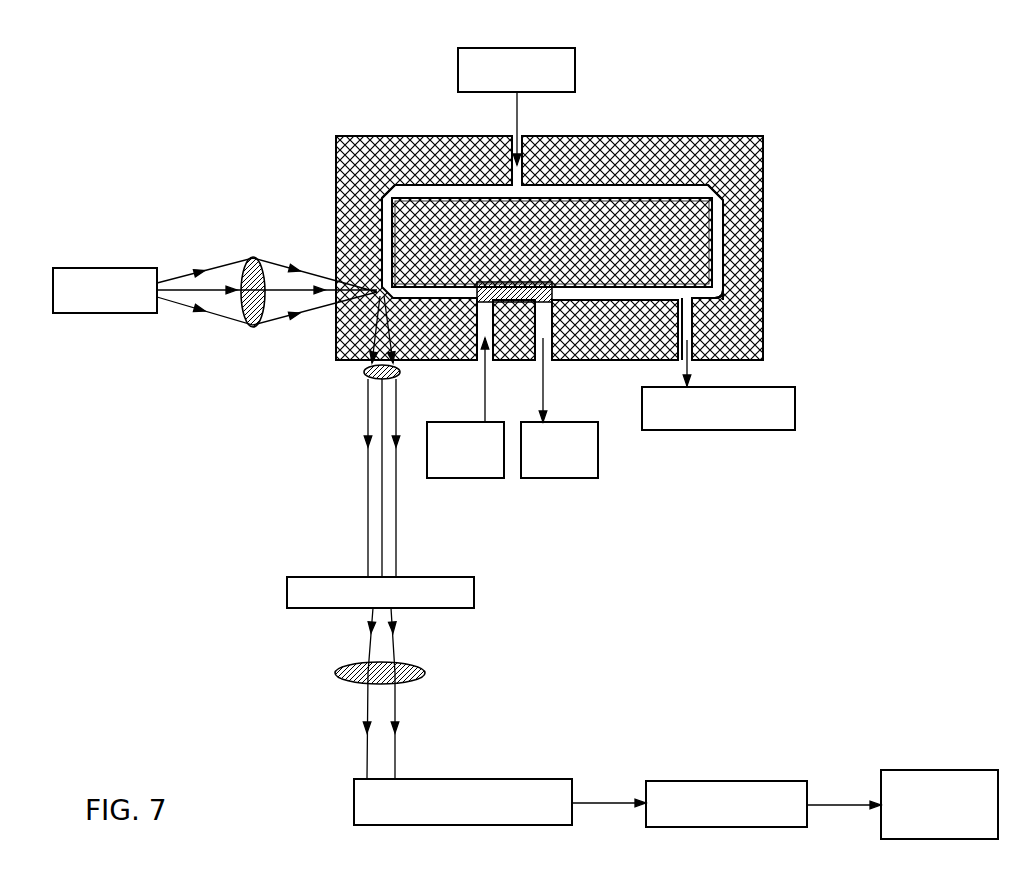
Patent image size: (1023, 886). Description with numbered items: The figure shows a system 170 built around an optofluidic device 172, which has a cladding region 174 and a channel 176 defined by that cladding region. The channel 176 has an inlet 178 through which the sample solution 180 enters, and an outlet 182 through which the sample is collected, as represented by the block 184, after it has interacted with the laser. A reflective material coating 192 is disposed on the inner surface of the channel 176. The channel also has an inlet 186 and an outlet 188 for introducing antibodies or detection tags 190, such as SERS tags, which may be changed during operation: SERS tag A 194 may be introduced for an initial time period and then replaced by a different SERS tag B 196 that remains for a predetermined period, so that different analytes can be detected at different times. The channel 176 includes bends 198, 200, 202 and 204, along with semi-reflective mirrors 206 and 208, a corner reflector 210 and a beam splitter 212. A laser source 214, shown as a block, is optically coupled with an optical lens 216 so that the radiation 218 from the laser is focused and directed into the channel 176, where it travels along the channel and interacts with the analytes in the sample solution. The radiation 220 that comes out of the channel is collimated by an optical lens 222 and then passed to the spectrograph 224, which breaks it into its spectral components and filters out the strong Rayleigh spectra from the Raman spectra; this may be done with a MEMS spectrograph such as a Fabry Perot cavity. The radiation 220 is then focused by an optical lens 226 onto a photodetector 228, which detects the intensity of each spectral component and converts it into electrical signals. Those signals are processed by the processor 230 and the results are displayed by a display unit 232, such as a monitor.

The system 170 is at (828, 60).
The optofluidic device 172 is at (764, 195).
The cladding region 174 is at (763, 282).
The channel 176 is at (722, 255).
The inlet 178 is at (521, 140).
The sample solution 180 is at (575, 68).
The outlet 182 is at (688, 333).
The collection block 184 is at (795, 405).
The inlet 186 is at (486, 378).
The outlet 188 is at (545, 378).
The antibodies or detection tags 190 is at (480, 303).
The reflective material coating 192 is at (667, 185).
The SERS tag A 194 is at (561, 478).
The SERS tag B 196 is at (472, 478).
The bend 198 is at (380, 190).
The bend 200 is at (764, 152).
The bend 202 is at (745, 322).
The bend 204 is at (337, 328).
The semi-reflective mirror 206 is at (380, 205).
The semi-reflective mirror 208 is at (723, 210).
The corner reflector 210 is at (728, 292).
The beam splitter 212 is at (337, 352).
The laser source 214 is at (101, 268).
The optical lens 216 is at (253, 258).
The radiation 218 is at (232, 314).
The radiation 220 is at (368, 468).
The optical lens 222 is at (365, 374).
The spectrograph 224 is at (287, 592).
The optical lens 226 is at (337, 673).
The photodetector 228 is at (537, 778).
The processor 230 is at (725, 781).
The display unit 232 is at (937, 770).